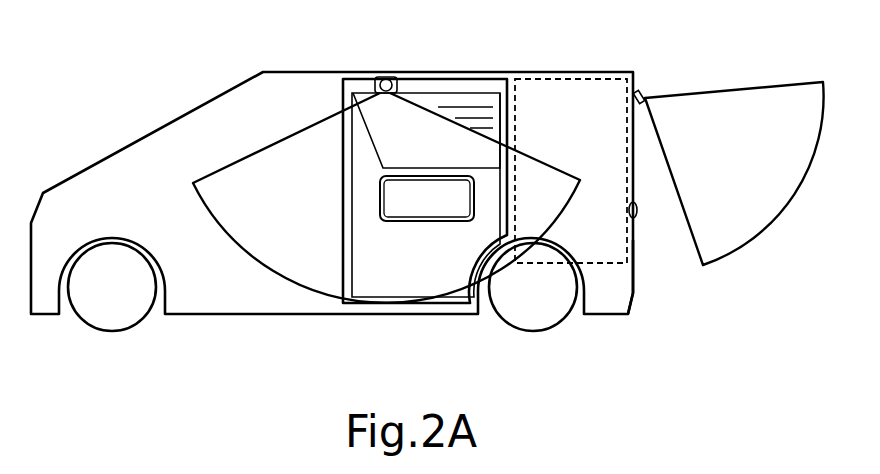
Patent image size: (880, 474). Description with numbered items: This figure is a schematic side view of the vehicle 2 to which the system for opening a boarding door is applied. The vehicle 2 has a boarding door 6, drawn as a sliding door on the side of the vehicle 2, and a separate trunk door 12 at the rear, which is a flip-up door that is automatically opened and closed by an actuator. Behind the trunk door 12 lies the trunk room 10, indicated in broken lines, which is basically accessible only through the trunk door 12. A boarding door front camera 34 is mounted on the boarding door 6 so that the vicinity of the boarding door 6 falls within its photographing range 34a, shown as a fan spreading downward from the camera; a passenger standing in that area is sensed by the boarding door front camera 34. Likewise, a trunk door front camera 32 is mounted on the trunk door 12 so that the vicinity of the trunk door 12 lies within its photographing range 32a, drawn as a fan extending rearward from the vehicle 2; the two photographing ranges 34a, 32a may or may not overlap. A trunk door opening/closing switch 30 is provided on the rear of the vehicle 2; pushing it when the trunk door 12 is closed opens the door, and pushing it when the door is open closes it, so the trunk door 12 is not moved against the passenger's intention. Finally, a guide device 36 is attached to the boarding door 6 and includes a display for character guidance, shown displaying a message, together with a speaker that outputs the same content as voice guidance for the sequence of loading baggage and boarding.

The vehicle 2 is at (110, 159).
The boarding door 6 is at (343, 98).
The trunk room 10 is at (558, 104).
The trunk door 12 is at (636, 250).
The trunk door opening/closing switch 30 is at (637, 216).
The trunk door front camera 32 is at (641, 88).
The photographing range 32a is at (740, 87).
The boarding door front camera 34 is at (388, 76).
The photographing range 34a is at (308, 287).
The guide device 36 is at (422, 210).